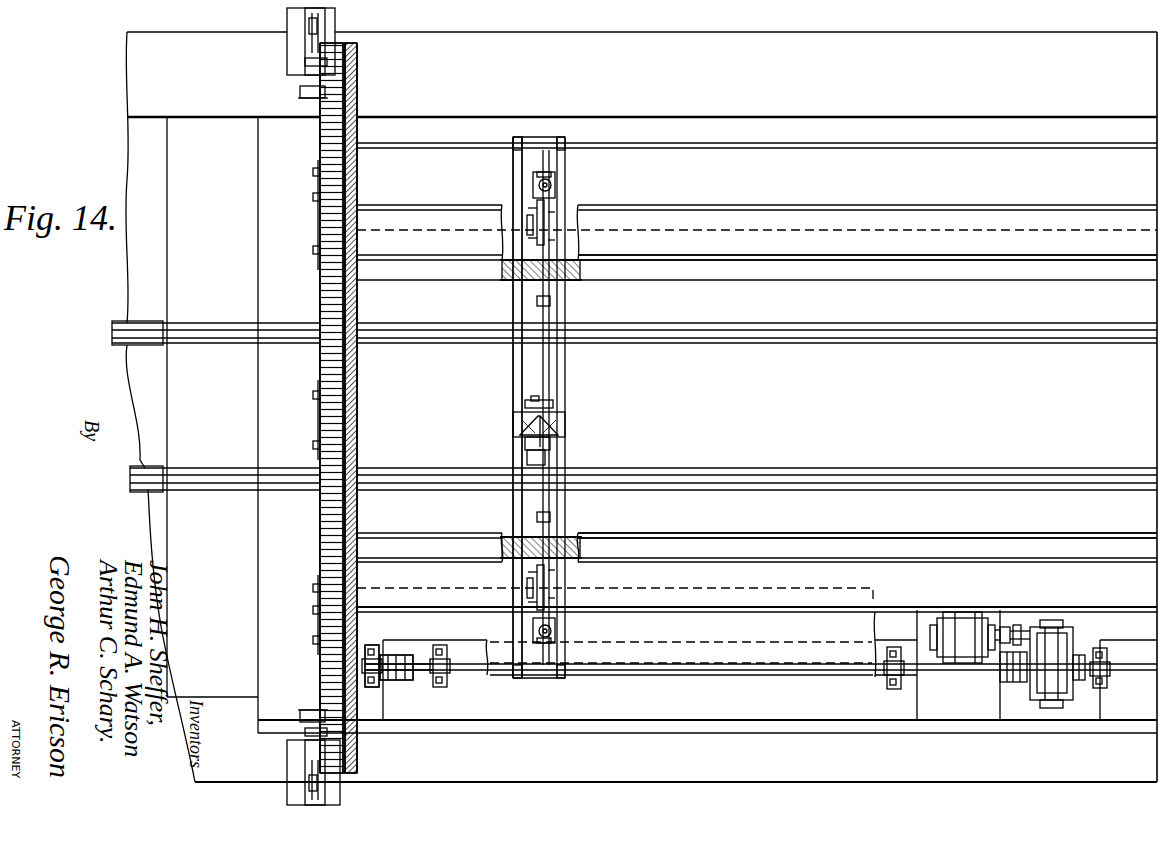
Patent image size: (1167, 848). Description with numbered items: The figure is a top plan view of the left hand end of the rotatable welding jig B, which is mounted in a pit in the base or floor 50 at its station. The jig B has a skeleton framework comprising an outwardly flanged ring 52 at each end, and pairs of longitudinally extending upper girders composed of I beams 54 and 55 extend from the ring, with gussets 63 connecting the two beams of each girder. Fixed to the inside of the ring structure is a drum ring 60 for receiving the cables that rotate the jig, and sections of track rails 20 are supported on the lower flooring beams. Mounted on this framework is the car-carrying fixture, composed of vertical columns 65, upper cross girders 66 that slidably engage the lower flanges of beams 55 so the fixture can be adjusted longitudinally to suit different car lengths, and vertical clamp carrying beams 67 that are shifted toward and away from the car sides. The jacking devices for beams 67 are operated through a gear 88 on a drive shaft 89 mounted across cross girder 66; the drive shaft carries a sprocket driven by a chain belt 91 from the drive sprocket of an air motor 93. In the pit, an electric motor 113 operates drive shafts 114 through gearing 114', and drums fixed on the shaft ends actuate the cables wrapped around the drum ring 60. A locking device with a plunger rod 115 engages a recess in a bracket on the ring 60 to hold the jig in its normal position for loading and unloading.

The base or floor 50 is at (175, 163).
The gussets 63 is at (268, 152).
The I beams 54 is at (744, 218).
The I beams 55 is at (682, 270).
The track rails 20 is at (135, 345).
The jig B is at (366, 101).
The drum ring 60 is at (358, 166).
The outwardly flanged ring 52 is at (325, 283).
The vertical columns 65 is at (514, 152).
The upper cross girders 66 is at (514, 352).
The drive shaft 89 is at (550, 356).
The gear 88 is at (556, 188).
The vertical clamp carrying beams 67 is at (556, 226).
The chain belt 91 is at (527, 405).
The air motor 93 is at (566, 424).
The plunger rod 115 is at (313, 44).
The drive shafts 114 is at (759, 664).
The gearing 114' is at (399, 652).
The electric motor 113 is at (960, 626).